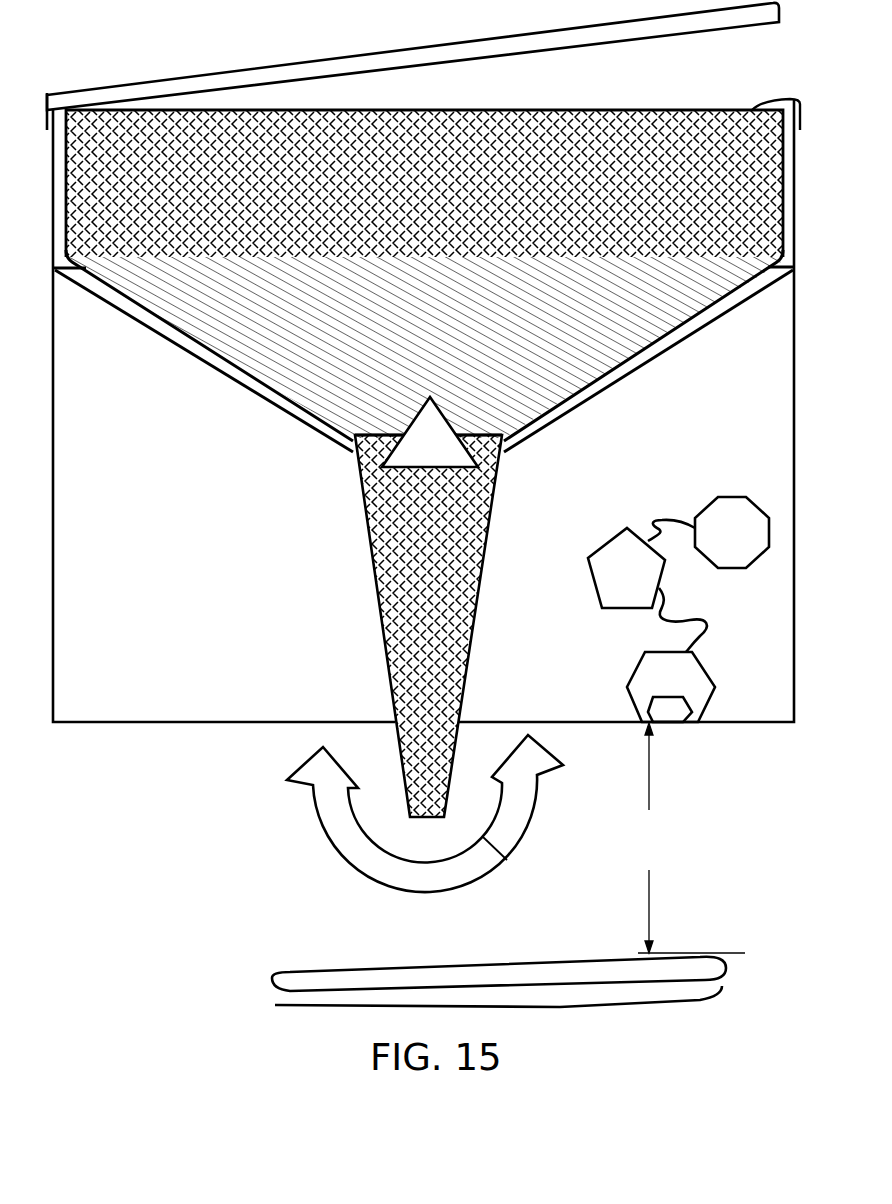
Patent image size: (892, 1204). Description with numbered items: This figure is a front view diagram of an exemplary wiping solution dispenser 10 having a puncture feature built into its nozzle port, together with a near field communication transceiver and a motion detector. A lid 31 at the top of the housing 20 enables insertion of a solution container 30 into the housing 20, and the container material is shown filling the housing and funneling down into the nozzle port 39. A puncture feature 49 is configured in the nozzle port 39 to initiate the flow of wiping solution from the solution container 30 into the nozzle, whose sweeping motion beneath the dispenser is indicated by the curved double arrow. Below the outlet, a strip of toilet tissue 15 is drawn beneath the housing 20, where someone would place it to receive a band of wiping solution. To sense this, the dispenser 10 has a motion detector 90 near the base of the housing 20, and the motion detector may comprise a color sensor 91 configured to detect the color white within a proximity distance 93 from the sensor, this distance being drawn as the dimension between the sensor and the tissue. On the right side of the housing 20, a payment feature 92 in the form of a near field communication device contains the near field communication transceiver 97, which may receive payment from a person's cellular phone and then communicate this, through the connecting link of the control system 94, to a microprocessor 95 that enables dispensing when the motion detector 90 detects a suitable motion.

The wiping solution dispenser 10 is at (240, 393).
The material strip 15 is at (573, 970).
The housing 20 is at (712, 278).
The solution container 30 is at (623, 320).
The lid 31 is at (237, 80).
The nozzle port 39 is at (360, 470).
The puncture feature 49 is at (482, 477).
The motion detector 90 is at (689, 698).
The color sensor 91 is at (677, 712).
The payment feature 92 is at (732, 505).
The proximity distance 93 is at (691, 838).
The control system 94 is at (671, 516).
The microprocessor 95 is at (640, 579).
The near field communication transceiver 97 is at (745, 544).